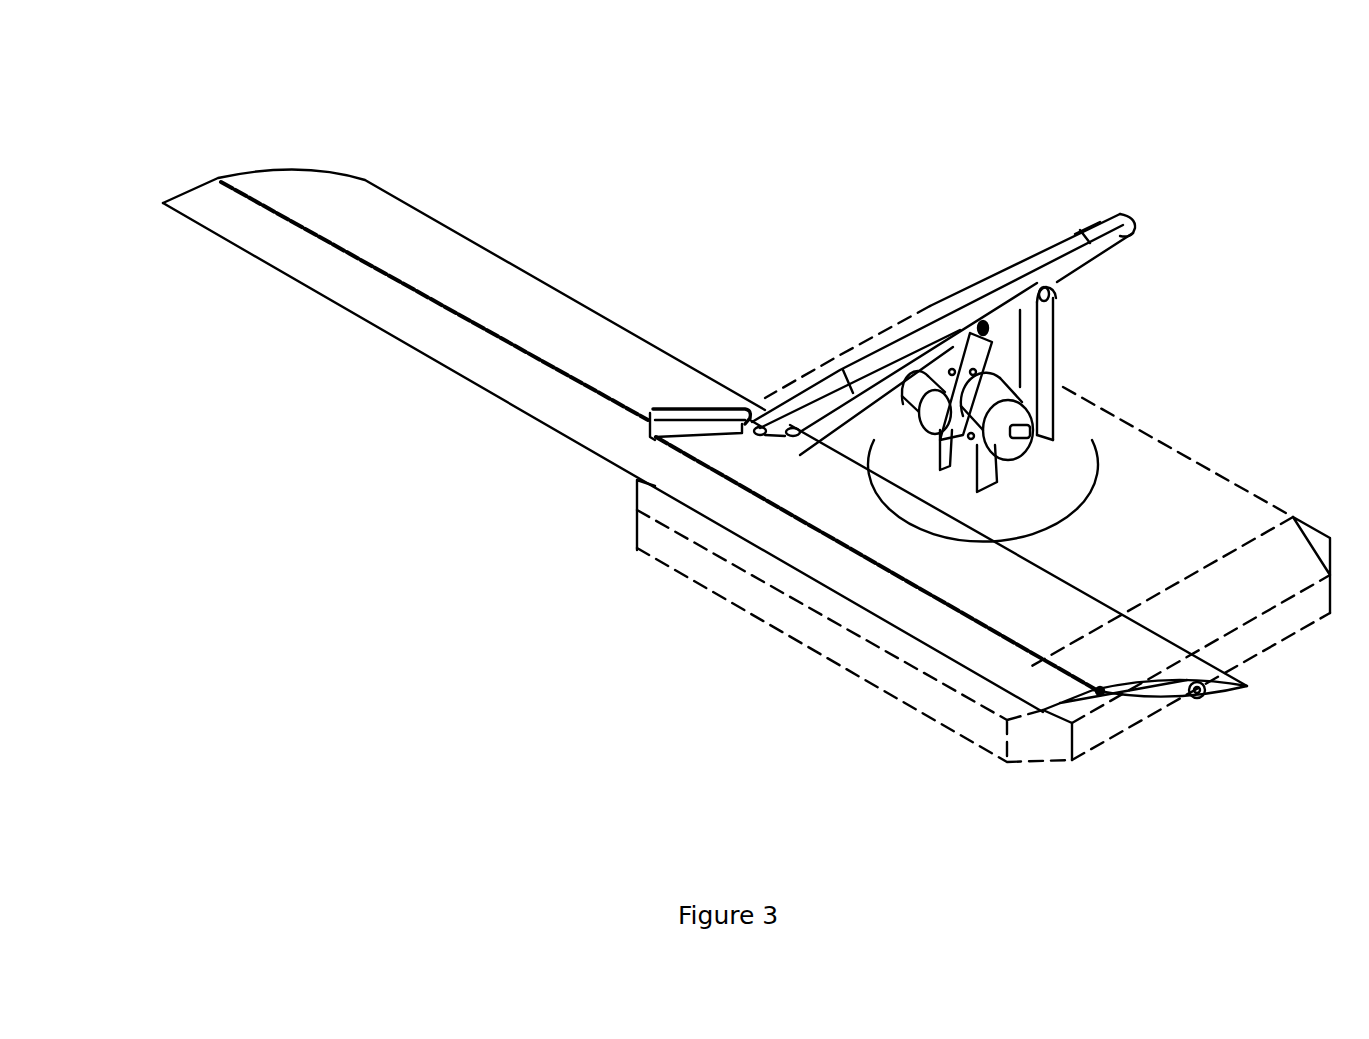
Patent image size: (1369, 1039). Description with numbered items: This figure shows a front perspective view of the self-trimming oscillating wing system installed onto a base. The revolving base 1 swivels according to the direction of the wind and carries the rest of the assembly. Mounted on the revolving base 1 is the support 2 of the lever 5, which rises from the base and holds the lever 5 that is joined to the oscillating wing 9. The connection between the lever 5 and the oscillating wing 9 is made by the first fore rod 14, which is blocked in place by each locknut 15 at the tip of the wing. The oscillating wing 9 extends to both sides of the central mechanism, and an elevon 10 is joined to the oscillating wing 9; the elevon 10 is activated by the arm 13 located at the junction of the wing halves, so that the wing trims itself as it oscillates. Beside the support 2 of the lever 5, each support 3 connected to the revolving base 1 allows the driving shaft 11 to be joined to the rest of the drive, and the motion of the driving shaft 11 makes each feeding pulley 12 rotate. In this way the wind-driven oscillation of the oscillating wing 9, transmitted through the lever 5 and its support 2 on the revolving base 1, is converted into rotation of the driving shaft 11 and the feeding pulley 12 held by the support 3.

The revolving base 1 is at (1060, 487).
The support of lever 2 is at (1040, 370).
The support of driving shaft 3 is at (1005, 488).
The lever 5 is at (1077, 263).
The oscillating wing 9 is at (433, 237).
The elevon 10 is at (483, 365).
The driving shaft 11 is at (1030, 450).
The feeding pulley 12 is at (1053, 414).
The arm activating the elevon 13 is at (700, 405).
The first fore rod 14 is at (1205, 698).
The first locknut 15 is at (1183, 700).